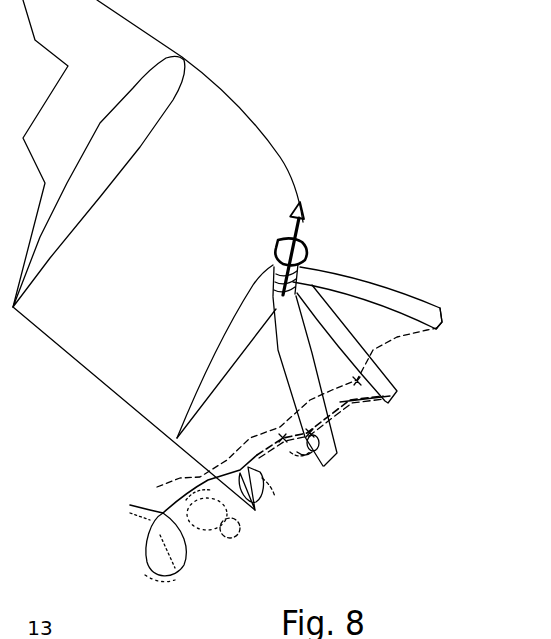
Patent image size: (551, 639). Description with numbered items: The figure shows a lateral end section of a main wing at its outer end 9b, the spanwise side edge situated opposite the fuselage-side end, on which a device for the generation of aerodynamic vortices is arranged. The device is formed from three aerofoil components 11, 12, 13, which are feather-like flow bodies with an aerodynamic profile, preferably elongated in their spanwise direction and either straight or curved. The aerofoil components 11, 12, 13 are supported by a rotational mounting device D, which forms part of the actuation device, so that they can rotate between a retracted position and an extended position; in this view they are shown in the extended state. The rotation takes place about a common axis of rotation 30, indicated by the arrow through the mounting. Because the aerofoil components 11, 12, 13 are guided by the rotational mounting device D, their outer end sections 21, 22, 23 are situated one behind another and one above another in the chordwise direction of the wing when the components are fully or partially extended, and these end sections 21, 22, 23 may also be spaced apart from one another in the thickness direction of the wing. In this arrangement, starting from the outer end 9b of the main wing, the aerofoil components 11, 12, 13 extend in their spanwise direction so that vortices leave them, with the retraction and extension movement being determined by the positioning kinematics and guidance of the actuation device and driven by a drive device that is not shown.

The outer end of the main wing 9b is at (207, 452).
The common axis of rotation 30 is at (293, 238).
The rotational mounting device D is at (343, 217).
The aerofoil component 13 is at (382, 273).
The end section 23 is at (435, 312).
The end section 22 is at (388, 403).
The aerofoil component 11 is at (353, 438).
The aerofoil component 12 is at (423, 362).
The end section 21 is at (338, 455).